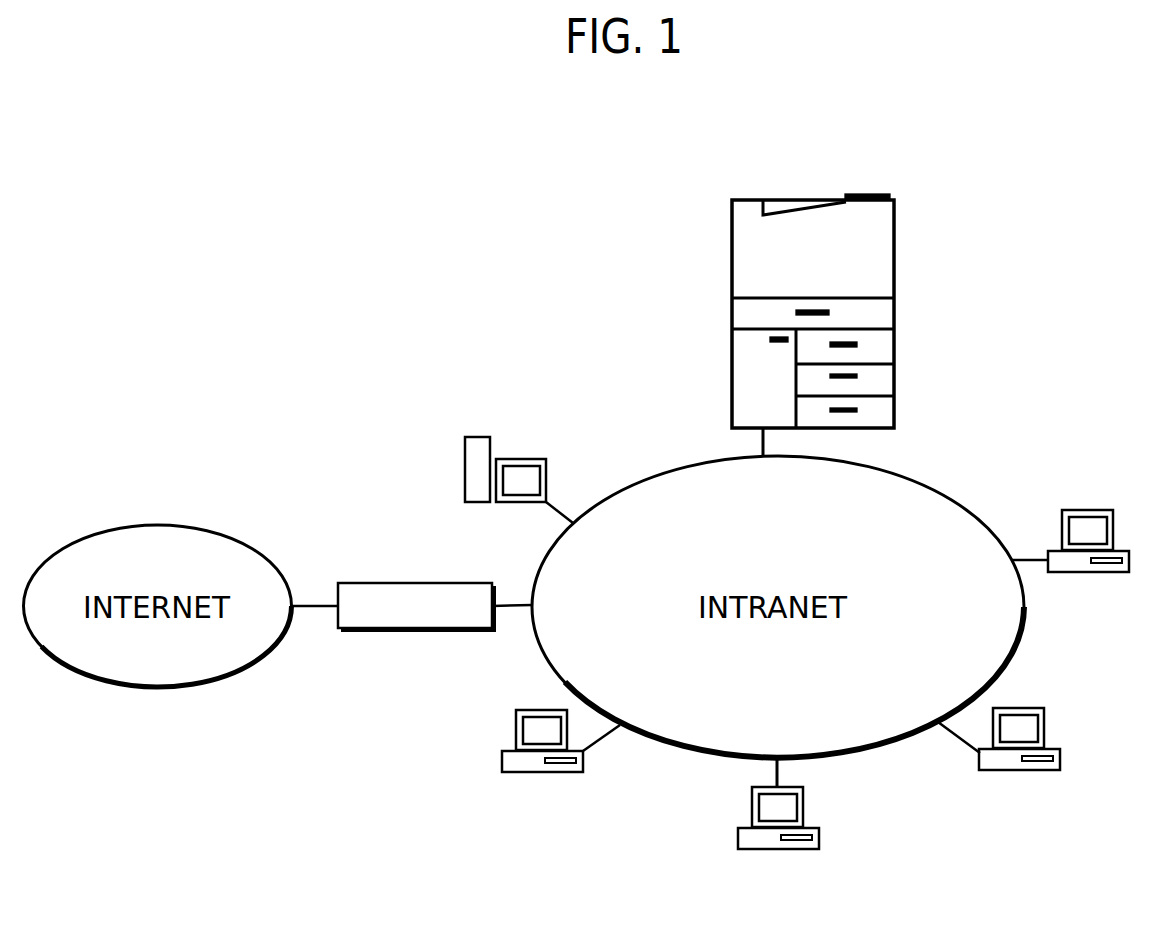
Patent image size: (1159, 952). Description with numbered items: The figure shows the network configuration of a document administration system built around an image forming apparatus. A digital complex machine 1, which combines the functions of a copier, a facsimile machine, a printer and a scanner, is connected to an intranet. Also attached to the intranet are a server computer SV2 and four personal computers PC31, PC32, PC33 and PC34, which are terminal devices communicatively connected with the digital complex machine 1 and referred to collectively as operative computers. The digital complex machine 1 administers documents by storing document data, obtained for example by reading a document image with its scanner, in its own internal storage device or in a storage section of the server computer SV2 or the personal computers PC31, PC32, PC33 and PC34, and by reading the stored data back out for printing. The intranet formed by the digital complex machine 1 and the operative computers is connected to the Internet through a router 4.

The digital complex machine 1 is at (873, 194).
The router 4 is at (440, 630).
The server computer SV2 is at (522, 458).
The personal computer PC31 is at (535, 773).
The personal computer PC32 is at (770, 850).
The personal computer PC33 is at (1018, 773).
The personal computer PC34 is at (1085, 573).